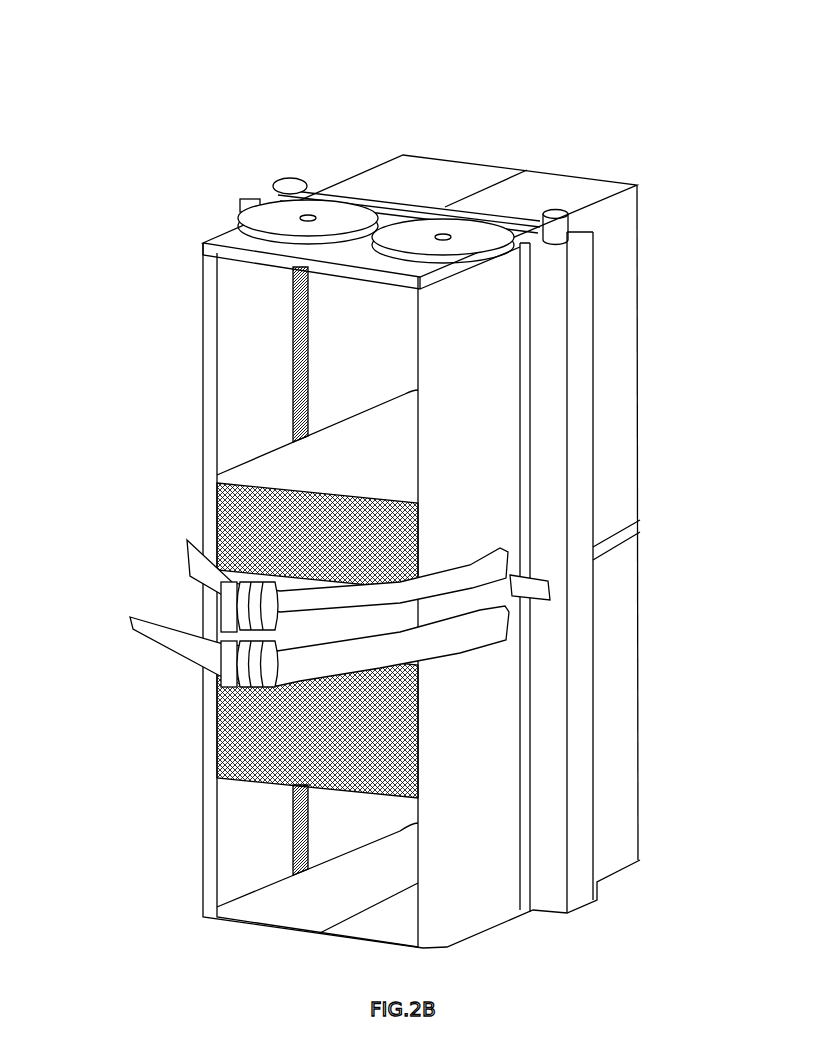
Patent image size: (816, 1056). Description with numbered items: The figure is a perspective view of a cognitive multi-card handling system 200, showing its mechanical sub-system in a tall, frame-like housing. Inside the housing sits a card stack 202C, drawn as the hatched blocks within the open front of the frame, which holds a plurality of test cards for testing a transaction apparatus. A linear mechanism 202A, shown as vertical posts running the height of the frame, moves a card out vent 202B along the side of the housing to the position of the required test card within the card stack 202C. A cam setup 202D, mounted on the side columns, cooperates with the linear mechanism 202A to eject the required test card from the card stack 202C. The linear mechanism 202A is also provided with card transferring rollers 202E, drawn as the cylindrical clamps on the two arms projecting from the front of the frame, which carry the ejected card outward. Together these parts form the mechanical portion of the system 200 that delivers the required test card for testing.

The cognitive multi-card handling system 200 is at (565, 123).
The linear mechanism 202A is at (543, 352).
The card out vent 202B is at (642, 522).
The card stack 202C is at (257, 735).
The cam setup 202D is at (552, 593).
The card transferring rollers 202E is at (243, 662).